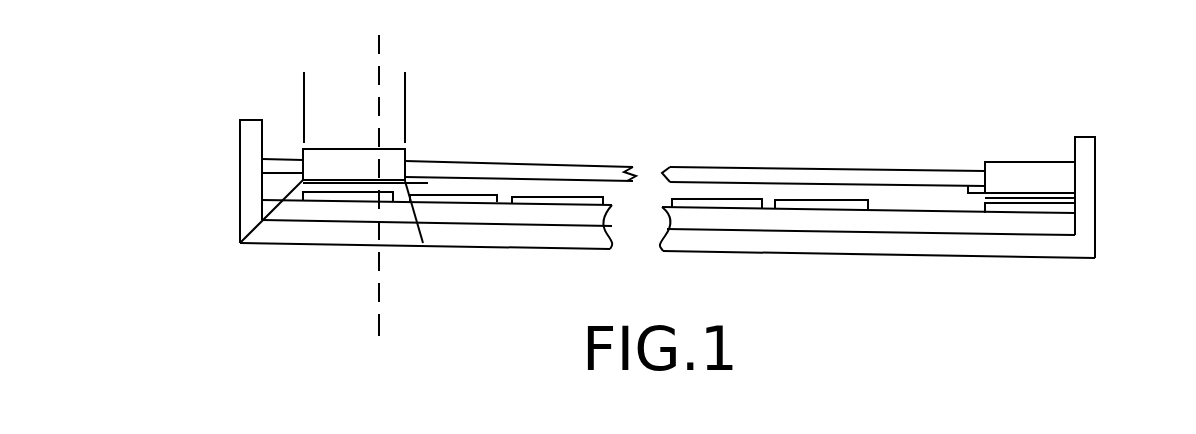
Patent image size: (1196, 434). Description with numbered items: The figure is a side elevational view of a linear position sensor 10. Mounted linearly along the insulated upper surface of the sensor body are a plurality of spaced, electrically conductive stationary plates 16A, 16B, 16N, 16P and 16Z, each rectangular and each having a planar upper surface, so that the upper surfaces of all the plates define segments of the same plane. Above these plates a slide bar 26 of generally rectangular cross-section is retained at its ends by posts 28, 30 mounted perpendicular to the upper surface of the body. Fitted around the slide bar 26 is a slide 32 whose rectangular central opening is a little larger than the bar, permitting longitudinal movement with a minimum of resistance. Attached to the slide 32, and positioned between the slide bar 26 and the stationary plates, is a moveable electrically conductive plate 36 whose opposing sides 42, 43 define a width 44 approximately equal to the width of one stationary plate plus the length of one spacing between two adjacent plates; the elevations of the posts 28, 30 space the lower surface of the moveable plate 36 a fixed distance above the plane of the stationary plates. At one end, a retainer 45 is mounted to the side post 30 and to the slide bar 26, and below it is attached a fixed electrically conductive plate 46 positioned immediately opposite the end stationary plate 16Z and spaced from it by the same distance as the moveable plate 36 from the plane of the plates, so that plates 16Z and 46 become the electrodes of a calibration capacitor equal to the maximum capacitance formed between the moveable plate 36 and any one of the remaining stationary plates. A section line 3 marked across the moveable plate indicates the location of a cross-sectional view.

The section line 3- 3 is at (390, 45).
The linear position sensor 10 is at (877, 153).
The electrically conductive plate 16A is at (327, 192).
The electrically conductive plate 16B is at (465, 198).
The electrically conductive plate 16N is at (725, 206).
The electrically conductive plate 16P is at (823, 207).
The end stationary plate 16Z is at (1017, 210).
The slide bar 26 is at (582, 162).
The post 28 is at (238, 195).
The post 30 is at (1095, 190).
The slide 32 is at (367, 176).
The moveable electrically conductive plate 36 is at (428, 183).
The side 42 is at (240, 243).
The side 43 is at (423, 243).
The width 44 is at (405, 83).
The retainer 45 is at (1025, 162).
The fixed electrically conductive plate 46 is at (968, 192).